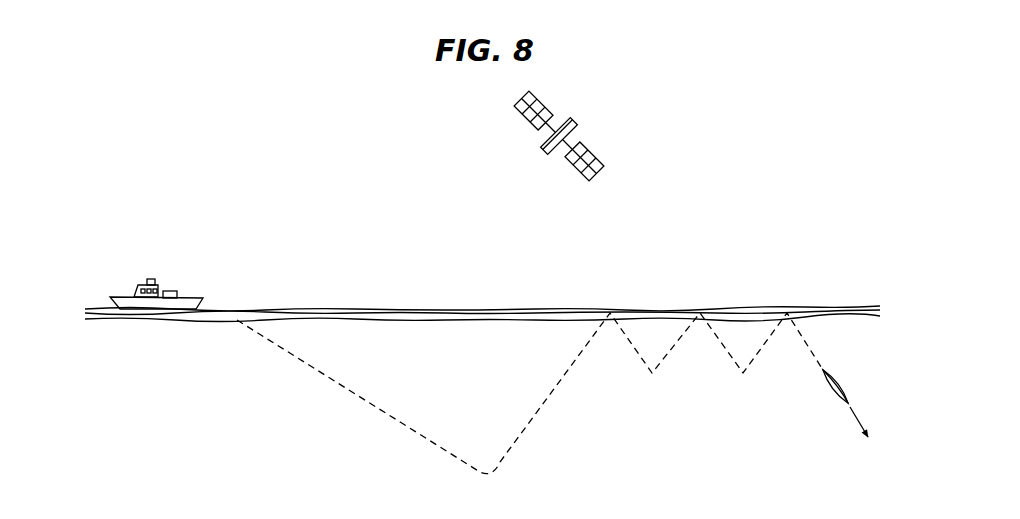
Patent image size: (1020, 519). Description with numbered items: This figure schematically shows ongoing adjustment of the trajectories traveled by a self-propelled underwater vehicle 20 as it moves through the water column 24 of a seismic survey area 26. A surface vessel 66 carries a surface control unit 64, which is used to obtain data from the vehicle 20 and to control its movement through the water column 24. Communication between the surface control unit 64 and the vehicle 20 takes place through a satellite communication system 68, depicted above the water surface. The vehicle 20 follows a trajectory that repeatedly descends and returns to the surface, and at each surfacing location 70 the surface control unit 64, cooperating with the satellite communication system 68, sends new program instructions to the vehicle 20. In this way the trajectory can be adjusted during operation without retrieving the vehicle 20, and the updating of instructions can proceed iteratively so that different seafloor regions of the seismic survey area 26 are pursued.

The self-propelled underwater vehicle 20 is at (820, 398).
The water column 24 is at (636, 425).
The seismic survey area 26 is at (792, 266).
The surface control unit 64 is at (168, 291).
The surface vessel 66 is at (117, 282).
The satellite communication system 68 is at (580, 110).
The surfacing location 70 is at (613, 301).